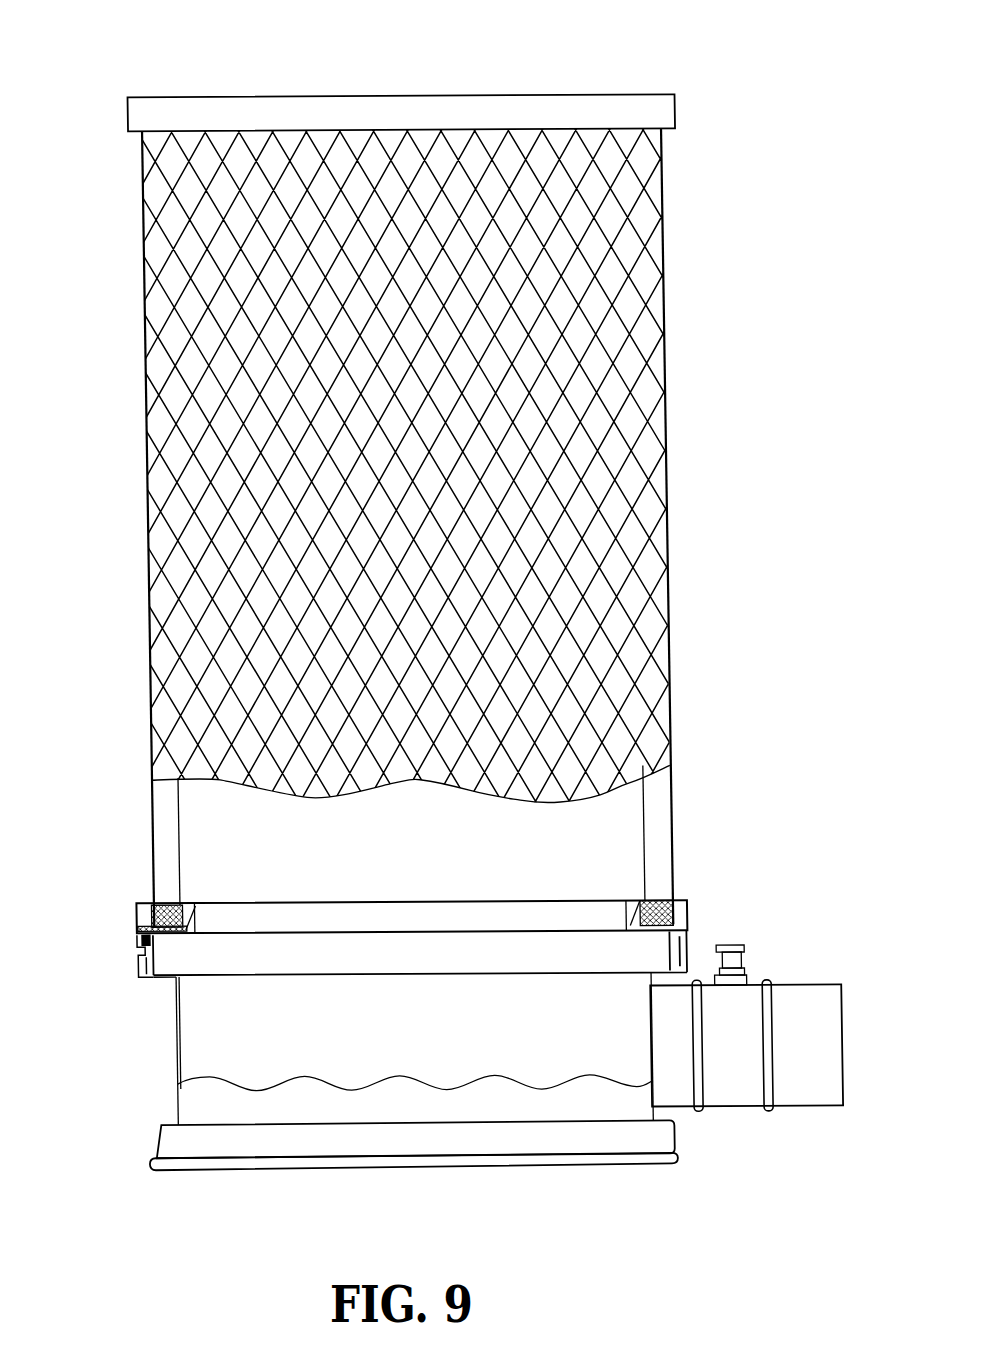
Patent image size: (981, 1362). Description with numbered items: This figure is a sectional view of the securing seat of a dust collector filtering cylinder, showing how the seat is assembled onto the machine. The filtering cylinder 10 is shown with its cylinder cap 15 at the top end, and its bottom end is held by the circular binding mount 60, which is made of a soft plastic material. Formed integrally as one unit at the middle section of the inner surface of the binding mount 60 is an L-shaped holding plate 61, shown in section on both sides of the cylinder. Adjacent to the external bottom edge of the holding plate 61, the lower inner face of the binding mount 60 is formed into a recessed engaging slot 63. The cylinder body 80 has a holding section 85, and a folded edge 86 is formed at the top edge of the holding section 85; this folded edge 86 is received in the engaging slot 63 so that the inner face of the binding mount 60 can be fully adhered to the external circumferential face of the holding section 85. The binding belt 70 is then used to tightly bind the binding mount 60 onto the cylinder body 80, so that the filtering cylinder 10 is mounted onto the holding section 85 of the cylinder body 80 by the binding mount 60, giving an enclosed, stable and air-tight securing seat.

The cylinder cap 15 is at (455, 105).
The filtering cylinder 10 is at (602, 412).
The binding mount 60 is at (123, 913).
The holding plate 61 is at (181, 918).
The engaging slot 63 is at (148, 944).
The folded edge 86 is at (125, 941).
The binding belt 70 is at (123, 963).
The holding section 85 is at (145, 978).
The cylinder body 80 is at (161, 1061).